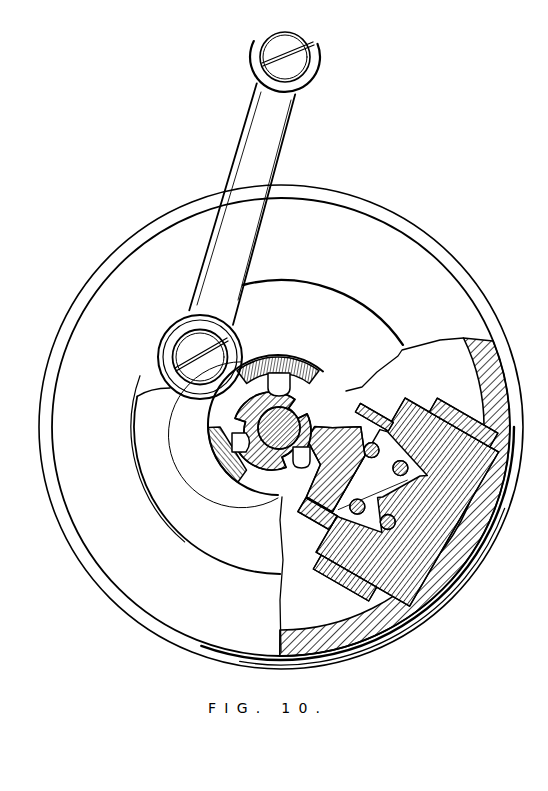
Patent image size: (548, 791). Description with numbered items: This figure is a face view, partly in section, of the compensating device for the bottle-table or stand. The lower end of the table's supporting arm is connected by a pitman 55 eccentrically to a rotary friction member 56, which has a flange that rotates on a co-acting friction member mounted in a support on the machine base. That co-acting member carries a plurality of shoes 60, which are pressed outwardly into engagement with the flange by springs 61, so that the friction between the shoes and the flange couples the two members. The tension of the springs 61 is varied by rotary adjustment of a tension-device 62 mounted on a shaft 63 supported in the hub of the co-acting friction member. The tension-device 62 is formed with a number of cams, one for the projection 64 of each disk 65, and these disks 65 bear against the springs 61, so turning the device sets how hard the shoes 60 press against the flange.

The pitman 55 is at (284, 142).
The rotary friction member 56 is at (78, 458).
The shoes 60 is at (455, 493).
The springs 61 is at (326, 522).
The tension-device 62 is at (310, 413).
The shaft 63 is at (300, 428).
The projection 64 is at (268, 382).
The disks 65 is at (312, 376).